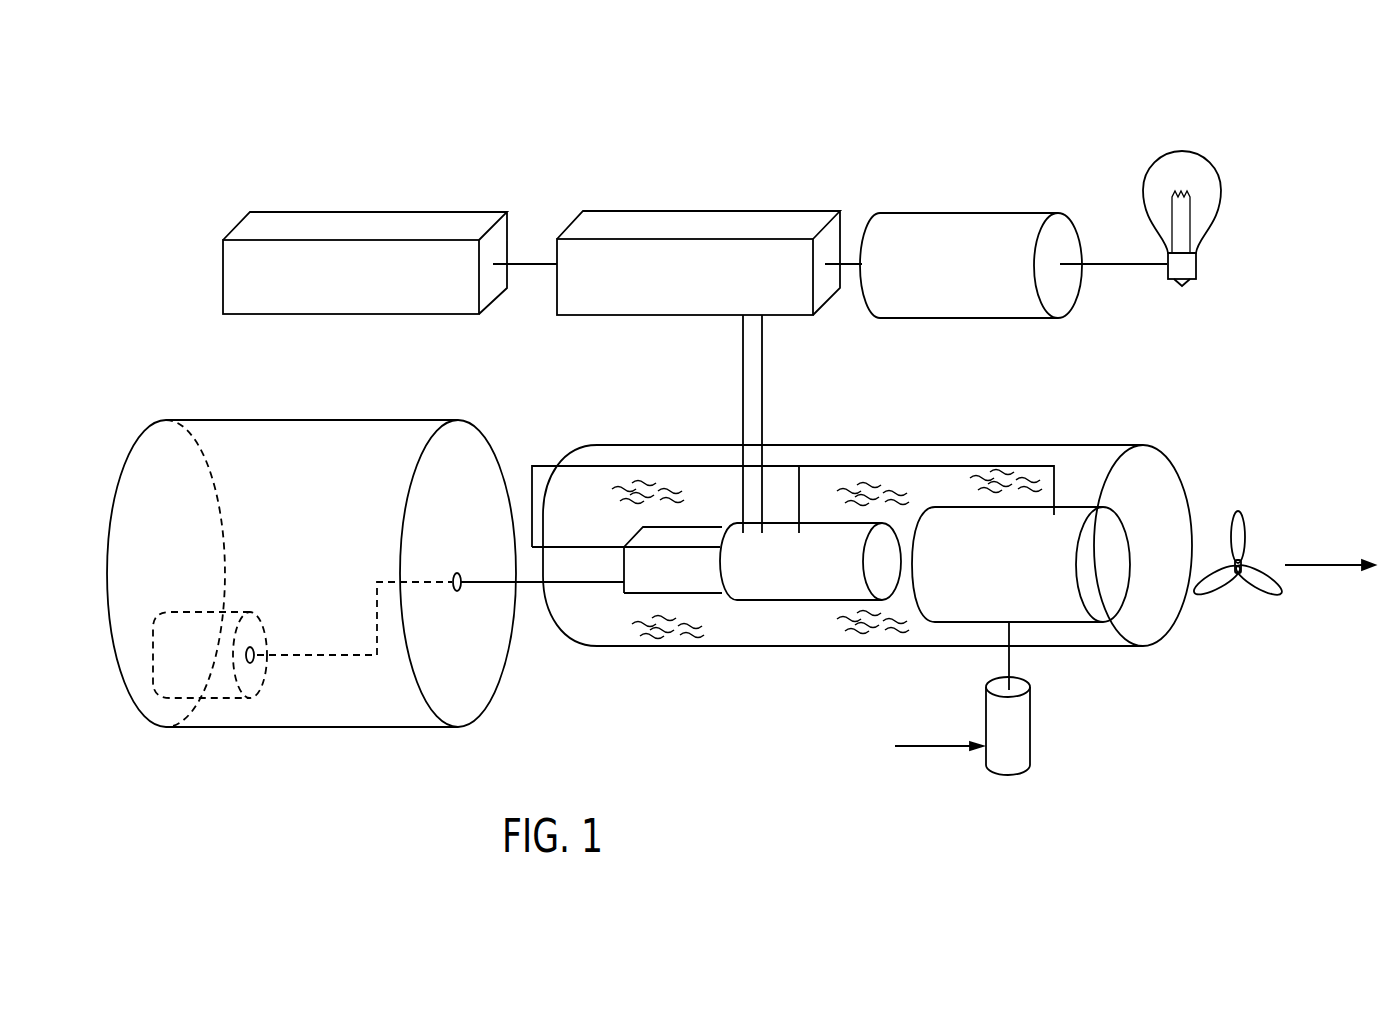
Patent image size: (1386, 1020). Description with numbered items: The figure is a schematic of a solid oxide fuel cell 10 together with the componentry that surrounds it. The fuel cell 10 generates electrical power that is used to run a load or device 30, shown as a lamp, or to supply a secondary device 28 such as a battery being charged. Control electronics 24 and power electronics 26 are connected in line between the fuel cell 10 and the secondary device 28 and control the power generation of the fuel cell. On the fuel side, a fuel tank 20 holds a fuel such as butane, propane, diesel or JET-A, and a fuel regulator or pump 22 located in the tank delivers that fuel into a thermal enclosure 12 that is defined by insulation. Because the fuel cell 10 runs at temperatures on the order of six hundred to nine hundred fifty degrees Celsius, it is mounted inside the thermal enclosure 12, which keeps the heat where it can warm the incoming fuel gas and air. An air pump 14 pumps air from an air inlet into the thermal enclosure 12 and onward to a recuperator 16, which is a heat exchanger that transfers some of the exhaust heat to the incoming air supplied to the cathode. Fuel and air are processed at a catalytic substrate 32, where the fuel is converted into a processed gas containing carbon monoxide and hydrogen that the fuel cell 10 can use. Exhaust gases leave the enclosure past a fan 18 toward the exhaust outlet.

The solid oxide fuel cell 10 is at (845, 590).
The thermal enclosure 12 is at (670, 633).
The air pump 14 is at (1007, 755).
The recuperator 16 is at (1062, 610).
The fan 18 is at (1243, 530).
The fuel tank 20 is at (270, 445).
The fuel pump 22 is at (227, 683).
The control electronics 24 is at (383, 218).
The power electronics 26 is at (709, 222).
The secondary device 28 is at (950, 228).
The device 30 is at (1185, 172).
The catalytic substrate 32 is at (642, 583).